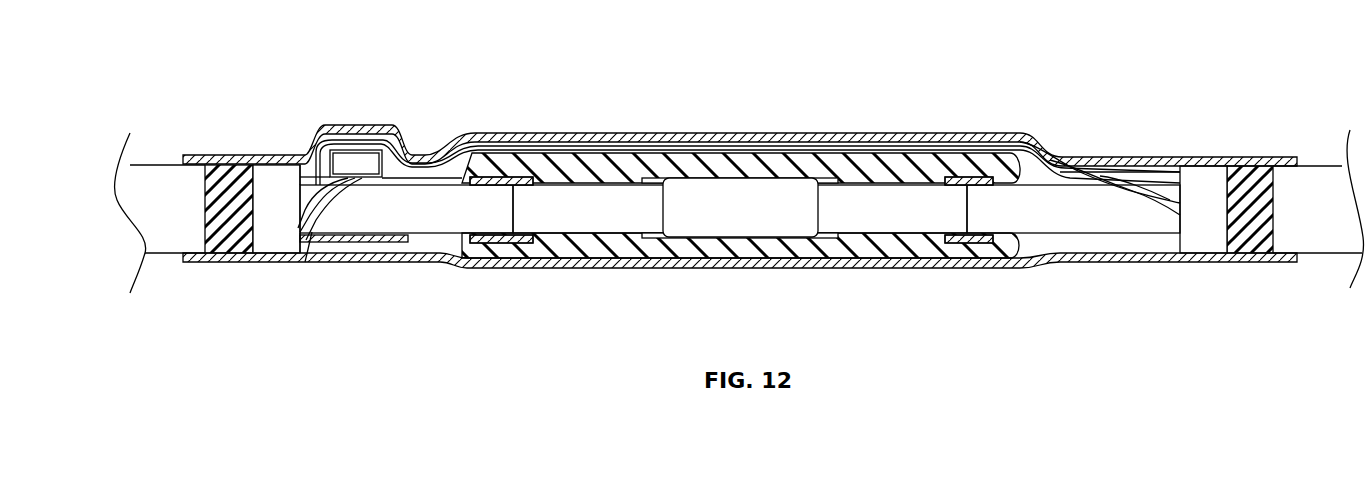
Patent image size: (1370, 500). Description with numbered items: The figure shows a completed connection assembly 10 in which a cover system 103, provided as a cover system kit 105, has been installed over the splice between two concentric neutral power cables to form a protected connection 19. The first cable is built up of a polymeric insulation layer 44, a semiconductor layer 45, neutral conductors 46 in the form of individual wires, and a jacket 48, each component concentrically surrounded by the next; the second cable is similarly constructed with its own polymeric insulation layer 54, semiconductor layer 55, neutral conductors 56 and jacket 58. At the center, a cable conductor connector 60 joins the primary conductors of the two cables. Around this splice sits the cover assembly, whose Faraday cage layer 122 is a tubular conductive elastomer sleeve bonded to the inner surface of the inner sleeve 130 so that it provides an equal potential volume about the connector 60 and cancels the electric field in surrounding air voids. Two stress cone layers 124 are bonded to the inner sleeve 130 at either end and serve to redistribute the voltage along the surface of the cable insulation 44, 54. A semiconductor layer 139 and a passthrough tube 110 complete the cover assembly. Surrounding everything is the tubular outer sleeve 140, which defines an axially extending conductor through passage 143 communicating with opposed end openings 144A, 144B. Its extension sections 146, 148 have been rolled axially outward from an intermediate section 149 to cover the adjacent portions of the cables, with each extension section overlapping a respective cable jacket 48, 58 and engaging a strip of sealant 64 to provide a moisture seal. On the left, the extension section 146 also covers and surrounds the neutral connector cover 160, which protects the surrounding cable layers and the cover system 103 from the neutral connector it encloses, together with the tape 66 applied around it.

The connection assembly 10 is at (167, 65).
The protected connection 19 is at (792, 77).
The polymeric insulation layer 44 is at (610, 205).
The semiconductor layer 45 is at (450, 218).
The neutral conductors 46 is at (812, 153).
The jacket 48 is at (158, 163).
The polymeric insulation layer 54 is at (895, 200).
The semiconductor layer 55 is at (1035, 200).
The neutral conductors 56 is at (1160, 190).
The jacket 58 is at (1303, 172).
The cable conductor connector 60 is at (730, 225).
The sealant 64 is at (232, 173).
The tape 66 is at (330, 128).
The cover system 103 is at (507, 92).
The cover system kit 105 is at (1062, 75).
The passthrough tube 110 is at (697, 143).
The Faraday cage layer 122 is at (770, 265).
The stress cone layers 124 is at (495, 243).
The inner sleeve 130 is at (567, 238).
The semiconductor layer 139 is at (868, 262).
The outer sleeve 140 is at (733, 143).
The conductor through passage 143 is at (1050, 234).
The end opening 144A is at (193, 232).
The end opening 144B is at (1283, 232).
The extension section 146 is at (360, 262).
The extension section 148 is at (1205, 262).
The intermediate section 149 is at (632, 265).
The neutral connector cover 160 is at (362, 162).